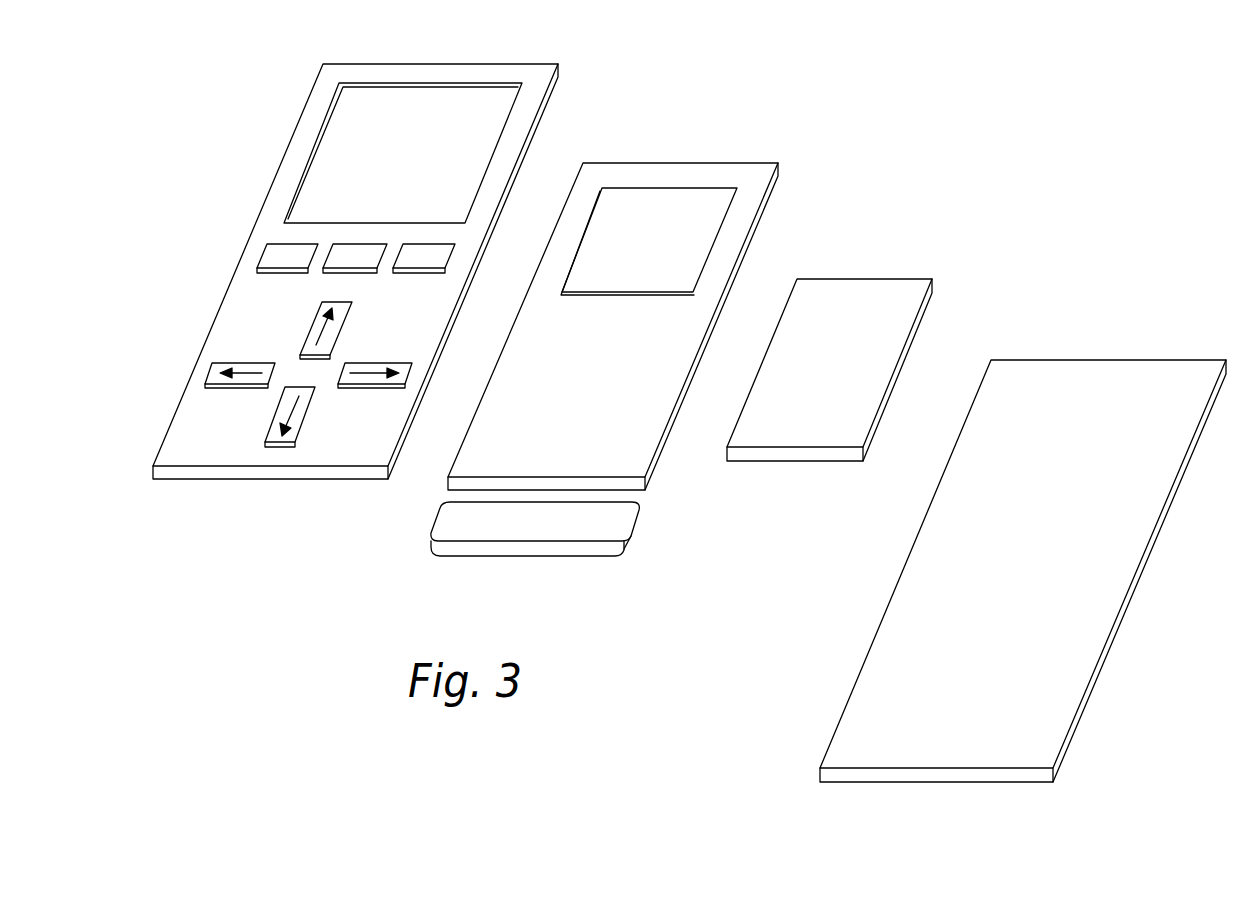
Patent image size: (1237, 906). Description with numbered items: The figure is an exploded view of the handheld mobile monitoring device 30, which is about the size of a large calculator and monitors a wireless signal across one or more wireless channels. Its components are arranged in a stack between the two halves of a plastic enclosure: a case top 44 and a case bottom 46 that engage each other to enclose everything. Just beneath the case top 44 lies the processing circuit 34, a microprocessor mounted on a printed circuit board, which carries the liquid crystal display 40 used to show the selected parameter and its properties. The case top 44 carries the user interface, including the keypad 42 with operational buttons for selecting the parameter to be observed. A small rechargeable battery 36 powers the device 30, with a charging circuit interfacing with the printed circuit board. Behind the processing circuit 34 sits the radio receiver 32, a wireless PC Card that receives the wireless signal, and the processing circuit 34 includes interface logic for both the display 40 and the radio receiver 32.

The handheld mobile monitoring device 30 is at (1047, 154).
The radio receiver 32 is at (858, 287).
The processing circuit 34 is at (697, 173).
The rechargeable battery 36 is at (592, 533).
The liquid crystal display (LCD) 40 is at (647, 207).
The keypad 42 is at (217, 362).
The case top 44 is at (250, 255).
The case bottom 46 is at (1096, 360).